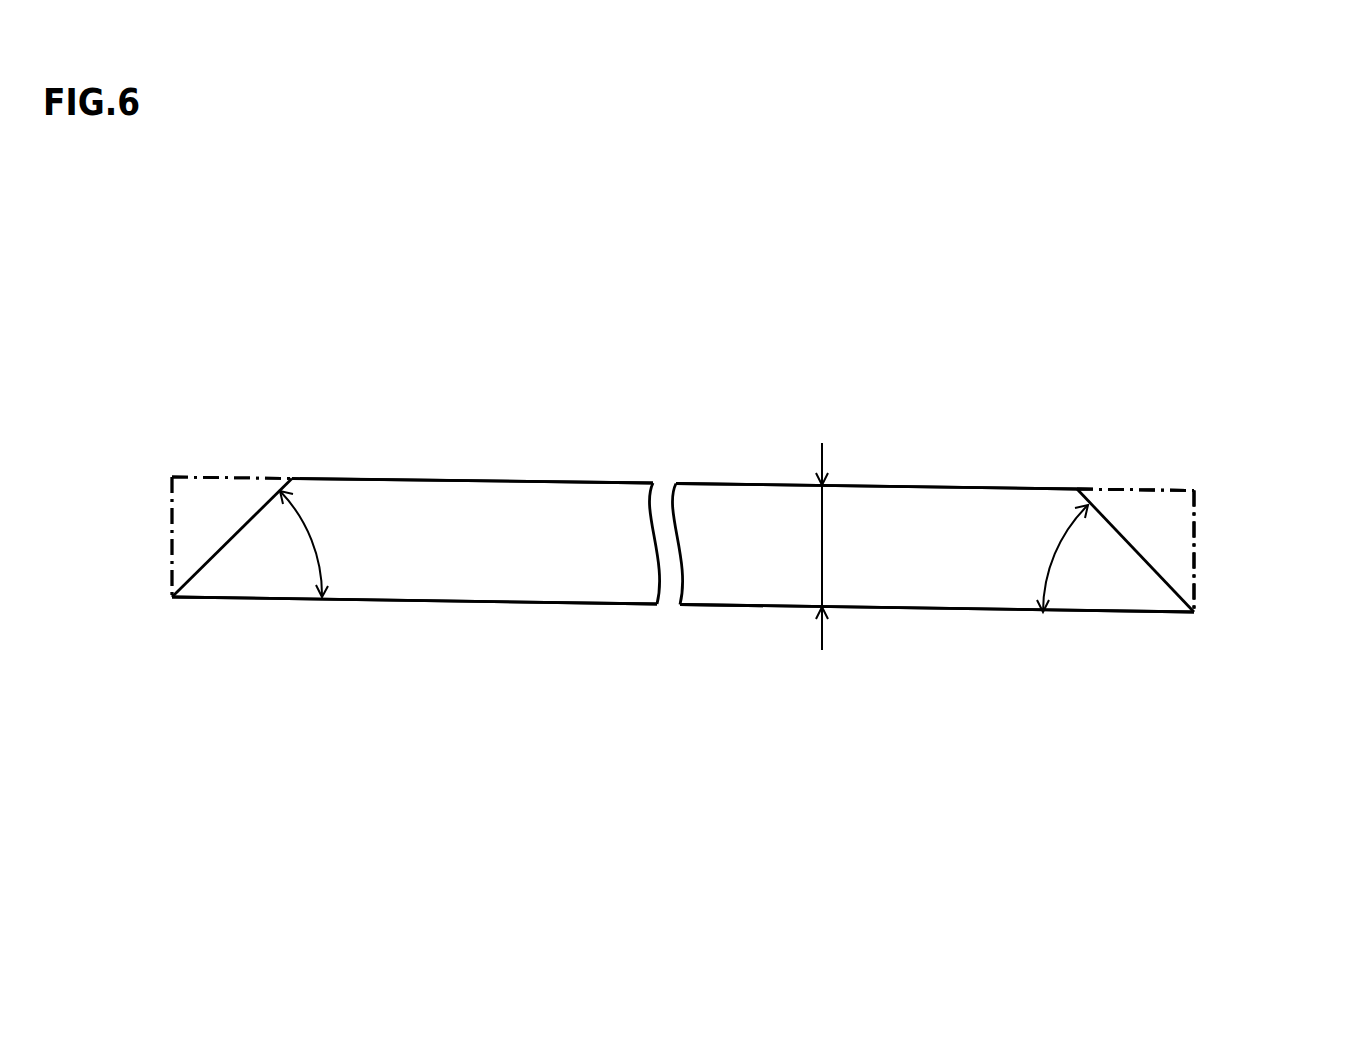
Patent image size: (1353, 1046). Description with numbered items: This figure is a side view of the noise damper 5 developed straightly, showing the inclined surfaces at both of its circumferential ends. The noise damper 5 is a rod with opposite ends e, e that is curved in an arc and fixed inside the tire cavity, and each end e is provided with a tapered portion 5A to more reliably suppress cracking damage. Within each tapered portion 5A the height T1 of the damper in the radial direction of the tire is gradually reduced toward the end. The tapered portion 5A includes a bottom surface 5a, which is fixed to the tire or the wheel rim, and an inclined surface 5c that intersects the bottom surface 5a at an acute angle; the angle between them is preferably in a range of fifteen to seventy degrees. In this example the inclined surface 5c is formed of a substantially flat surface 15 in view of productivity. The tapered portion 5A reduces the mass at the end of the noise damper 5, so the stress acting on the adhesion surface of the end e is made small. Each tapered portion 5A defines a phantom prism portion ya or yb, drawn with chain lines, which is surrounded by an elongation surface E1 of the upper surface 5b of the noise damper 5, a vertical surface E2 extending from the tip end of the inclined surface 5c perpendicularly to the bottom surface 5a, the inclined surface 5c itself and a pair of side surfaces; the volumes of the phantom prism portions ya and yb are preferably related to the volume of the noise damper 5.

The noise damper 5 is at (567, 457).
The bottom surface 5a is at (555, 602).
The upper surface 5b is at (377, 478).
The inclined surface 5c is at (1105, 518).
The substantially flat surface 15 is at (272, 497).
The tapered portion 5A is at (237, 573).
The end e is at (207, 465).
The elongation surface E1 is at (1173, 492).
The vertical surface E2 is at (1196, 505).
The phantom prism portion ya is at (197, 513).
The phantom prism portion yb is at (1167, 528).
The height of the tapered portion T1 is at (824, 534).